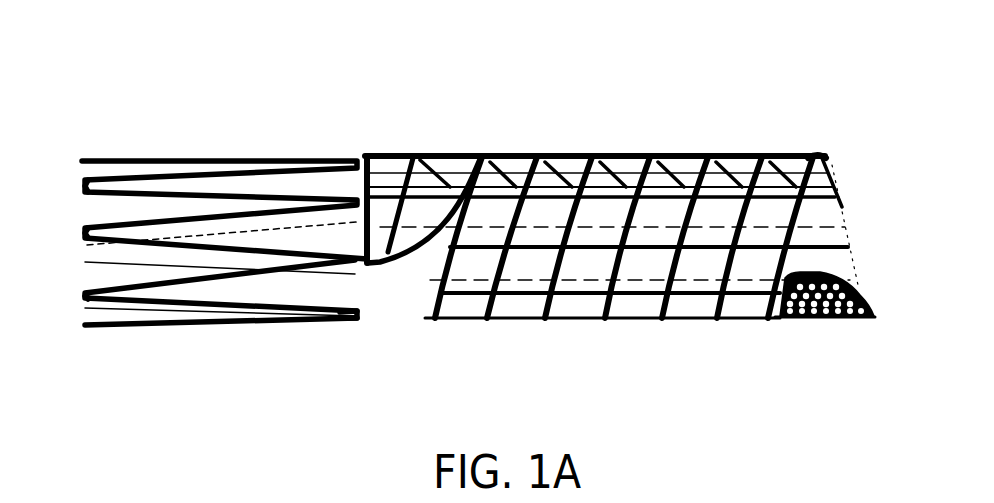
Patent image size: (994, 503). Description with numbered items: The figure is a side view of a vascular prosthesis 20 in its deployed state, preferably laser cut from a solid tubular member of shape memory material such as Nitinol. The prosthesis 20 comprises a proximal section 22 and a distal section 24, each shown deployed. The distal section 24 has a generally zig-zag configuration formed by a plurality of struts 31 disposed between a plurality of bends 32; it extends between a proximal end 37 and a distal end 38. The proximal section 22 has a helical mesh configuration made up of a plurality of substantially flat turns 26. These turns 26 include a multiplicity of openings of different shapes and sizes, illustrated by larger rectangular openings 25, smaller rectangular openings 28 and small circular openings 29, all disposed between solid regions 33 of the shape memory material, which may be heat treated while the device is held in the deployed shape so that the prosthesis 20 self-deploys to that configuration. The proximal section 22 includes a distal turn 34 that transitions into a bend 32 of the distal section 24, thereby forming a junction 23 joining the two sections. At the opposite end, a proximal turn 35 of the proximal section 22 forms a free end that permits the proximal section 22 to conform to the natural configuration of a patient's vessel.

The vascular prosthesis 20 is at (383, 93).
The proximal section 22 is at (578, 150).
The junction 23 is at (378, 275).
The distal section 24 is at (207, 152).
The larger rectangular openings 25 is at (463, 310).
The turns 26 is at (700, 320).
The smaller rectangular openings 28 is at (820, 192).
The small circular openings 29 is at (787, 320).
The struts 31 is at (120, 282).
The bends 32 is at (82, 233).
The solid regions 33 is at (510, 305).
The distal turn 34 is at (426, 155).
The proximal turn 35 is at (843, 320).
The proximal end 37 is at (350, 330).
The distal end 38 is at (91, 335).